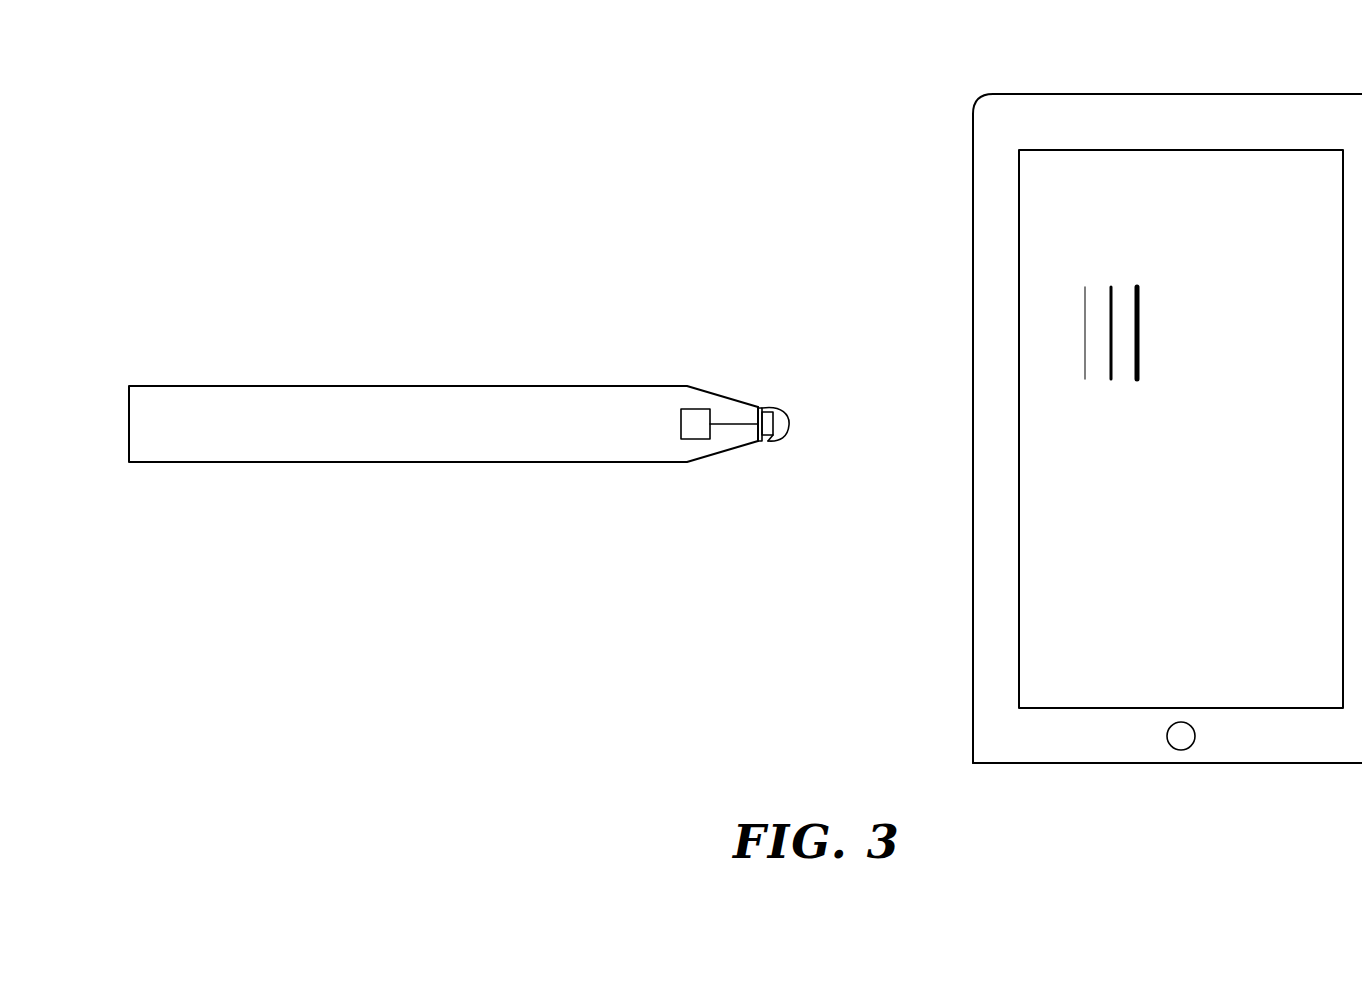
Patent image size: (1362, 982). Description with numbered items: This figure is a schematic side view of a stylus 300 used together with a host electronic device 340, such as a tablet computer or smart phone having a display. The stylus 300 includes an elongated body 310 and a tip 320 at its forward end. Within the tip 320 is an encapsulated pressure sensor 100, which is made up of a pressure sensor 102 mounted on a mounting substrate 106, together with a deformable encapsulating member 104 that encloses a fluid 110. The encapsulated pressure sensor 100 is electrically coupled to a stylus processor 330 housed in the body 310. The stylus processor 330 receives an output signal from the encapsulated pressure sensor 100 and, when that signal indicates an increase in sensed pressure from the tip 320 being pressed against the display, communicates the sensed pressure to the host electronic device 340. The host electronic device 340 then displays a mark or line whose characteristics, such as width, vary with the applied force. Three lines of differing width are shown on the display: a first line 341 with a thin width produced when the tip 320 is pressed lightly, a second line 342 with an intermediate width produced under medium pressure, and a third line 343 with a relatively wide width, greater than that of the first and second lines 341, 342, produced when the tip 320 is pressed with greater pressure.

The encapsulated pressure sensor 100 is at (769, 443).
The pressure sensor 102 is at (768, 410).
The deformable encapsulating member 104 is at (789, 411).
The mounting substrate 106 is at (761, 440).
The fluid 110 is at (804, 427).
The stylus 300 is at (512, 402).
The body 310 is at (410, 462).
The tip 320 is at (777, 384).
The stylus processor 330 is at (693, 428).
The host electronic device 340 is at (973, 202).
The first line 341 is at (1085, 360).
The second line 342 is at (1109, 305).
The third line 343 is at (1138, 355).